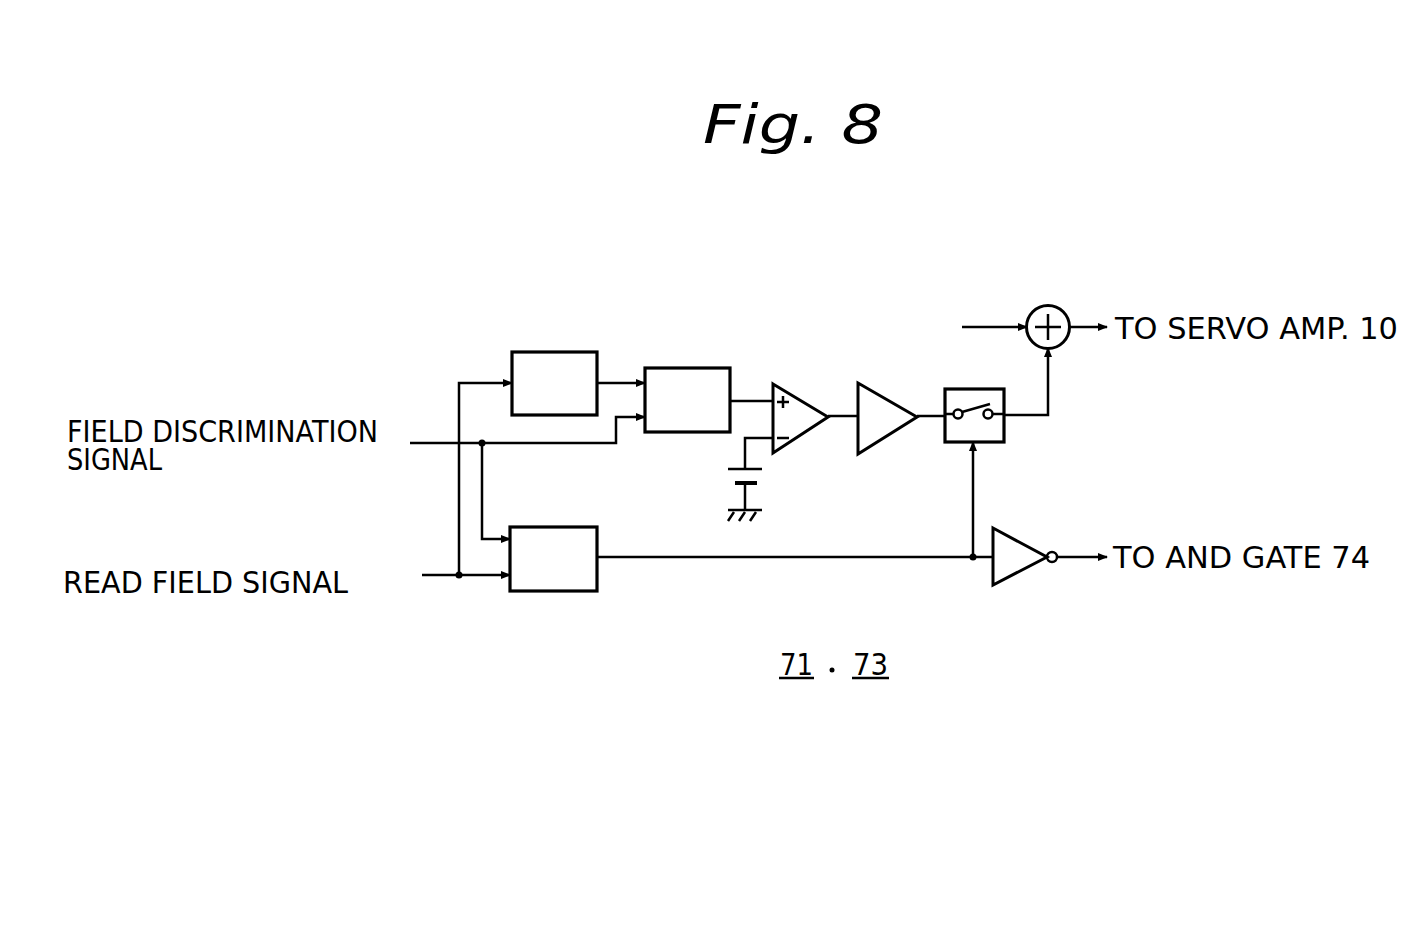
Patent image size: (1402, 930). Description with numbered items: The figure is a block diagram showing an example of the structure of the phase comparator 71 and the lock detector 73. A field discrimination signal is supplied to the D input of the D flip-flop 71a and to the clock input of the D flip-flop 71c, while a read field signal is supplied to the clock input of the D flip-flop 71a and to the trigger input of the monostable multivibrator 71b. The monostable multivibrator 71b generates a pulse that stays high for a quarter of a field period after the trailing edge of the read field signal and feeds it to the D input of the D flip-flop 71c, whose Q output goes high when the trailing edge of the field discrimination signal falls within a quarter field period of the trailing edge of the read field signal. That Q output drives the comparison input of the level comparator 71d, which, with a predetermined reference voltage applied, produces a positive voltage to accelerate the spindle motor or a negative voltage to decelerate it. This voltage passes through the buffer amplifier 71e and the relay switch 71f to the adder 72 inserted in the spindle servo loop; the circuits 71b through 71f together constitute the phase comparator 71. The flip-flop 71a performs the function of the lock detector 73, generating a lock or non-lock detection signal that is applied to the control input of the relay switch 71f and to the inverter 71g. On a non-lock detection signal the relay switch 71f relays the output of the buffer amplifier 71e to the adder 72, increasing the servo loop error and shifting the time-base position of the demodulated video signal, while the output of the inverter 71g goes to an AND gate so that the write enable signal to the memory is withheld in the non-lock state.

The phase comparator 71 is at (769, 342).
The D flip-flop 71a is at (575, 526).
The monostable multivibrator 71b is at (587, 351).
The D flip-flop 71c is at (704, 367).
The level comparator 71d is at (806, 398).
The buffer amplifier 71e is at (887, 397).
The relay switch 71f is at (970, 389).
The inverter 71g is at (1021, 540).
The adder 72 is at (1063, 312).
The lock detector 73 is at (600, 599).